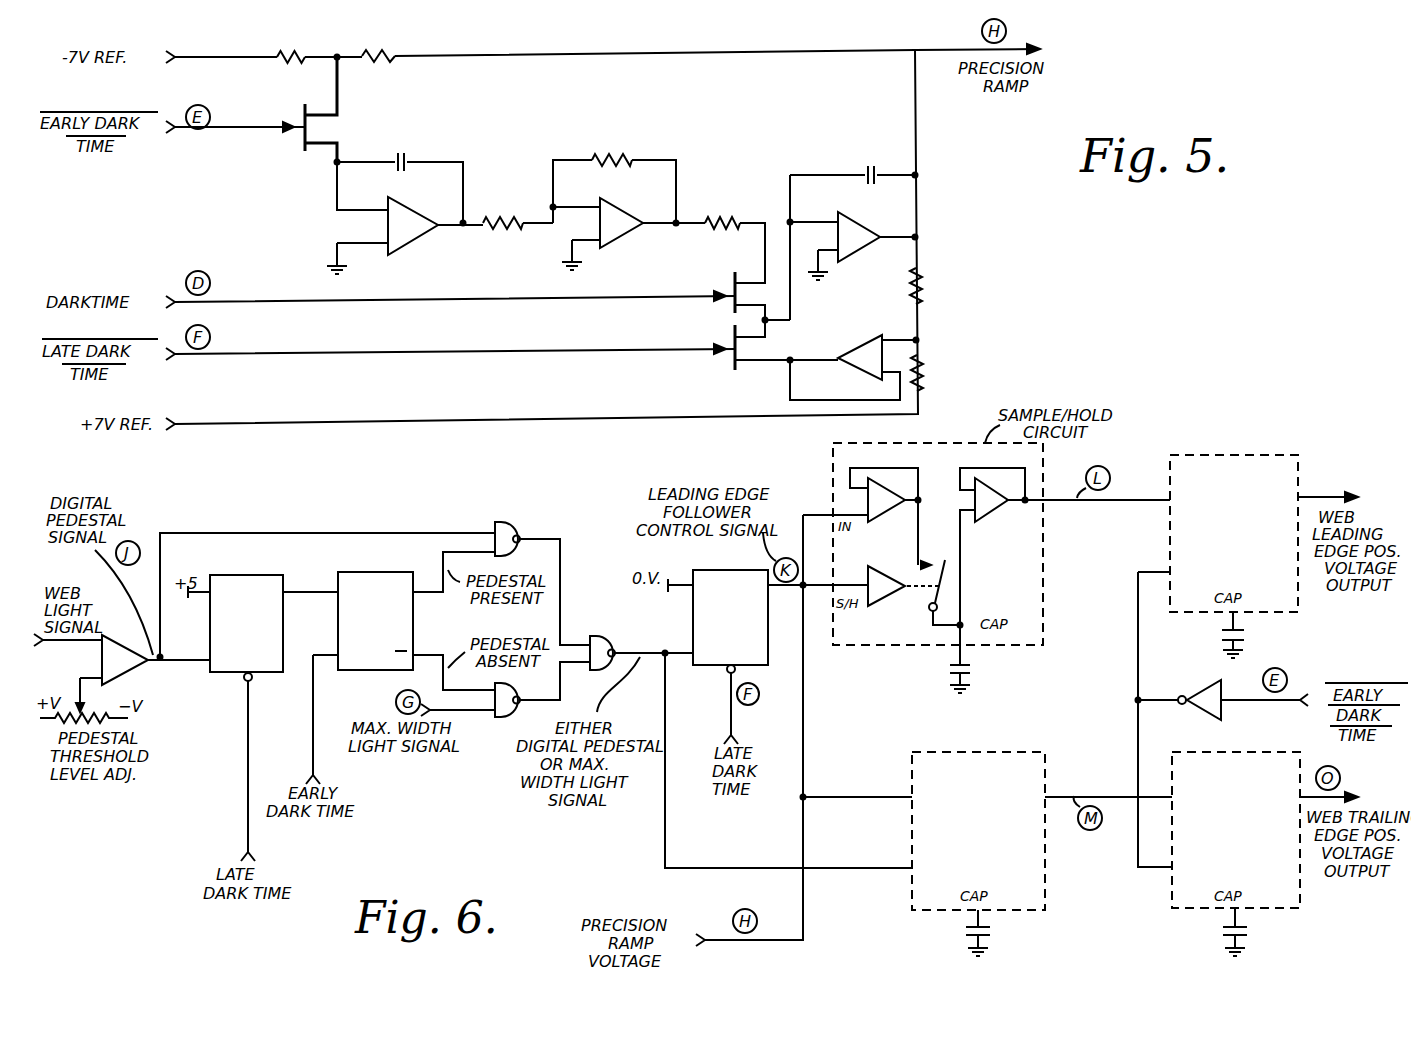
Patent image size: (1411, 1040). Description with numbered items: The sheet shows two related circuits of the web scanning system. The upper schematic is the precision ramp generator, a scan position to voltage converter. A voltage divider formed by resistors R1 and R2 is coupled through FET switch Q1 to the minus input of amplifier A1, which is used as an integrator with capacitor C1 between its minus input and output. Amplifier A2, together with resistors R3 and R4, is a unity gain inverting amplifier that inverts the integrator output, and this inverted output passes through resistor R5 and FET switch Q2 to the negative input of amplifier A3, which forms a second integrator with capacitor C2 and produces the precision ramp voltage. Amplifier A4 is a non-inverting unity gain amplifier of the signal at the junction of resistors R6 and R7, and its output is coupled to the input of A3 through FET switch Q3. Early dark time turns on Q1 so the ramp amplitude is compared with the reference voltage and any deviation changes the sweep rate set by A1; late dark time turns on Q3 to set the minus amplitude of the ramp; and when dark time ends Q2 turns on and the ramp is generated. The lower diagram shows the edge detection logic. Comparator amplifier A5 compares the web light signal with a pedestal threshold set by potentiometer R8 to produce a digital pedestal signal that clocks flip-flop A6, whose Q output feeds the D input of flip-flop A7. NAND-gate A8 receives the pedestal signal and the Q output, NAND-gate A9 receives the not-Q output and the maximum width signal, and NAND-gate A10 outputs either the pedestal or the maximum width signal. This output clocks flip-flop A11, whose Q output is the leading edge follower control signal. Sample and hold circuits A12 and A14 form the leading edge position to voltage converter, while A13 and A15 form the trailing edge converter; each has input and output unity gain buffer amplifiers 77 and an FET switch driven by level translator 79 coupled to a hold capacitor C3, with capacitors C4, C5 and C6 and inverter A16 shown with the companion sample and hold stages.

In FIG. 6, the input and output unity gain non-inverting buffer amplifiers 77 is at (897, 505).
In FIG. 6, the level translator 79 is at (955, 579).
In FIG. 5, the resistor R1 is at (290, 55).
In FIG. 5, the resistor R2 is at (378, 54).
In FIG. 5, the resistor R3 is at (500, 222).
In FIG. 5, the resistor R4 is at (611, 160).
In FIG. 5, the resistor R5 is at (721, 222).
In FIG. 5, the resistor R6 is at (936, 289).
In FIG. 5, the resistor R7 is at (936, 375).
In FIG. 6, the potentiometer R8 is at (84, 708).
In FIG. 5, the capacitor C1 is at (400, 178).
In FIG. 5, the capacitor C2 is at (852, 176).
In FIG. 6, the capacitor C3 is at (993, 659).
In FIG. 6, the hold capacitor C4 is at (1007, 933).
In FIG. 6, the hold capacitor C5 is at (1260, 635).
In FIG. 6, the hold capacitor C6 is at (1260, 932).
In FIG. 5, the field effect transistor switch Q1 is at (296, 109).
In FIG. 5, the FET switch Q2 is at (734, 291).
In FIG. 5, the FET switch Q3 is at (744, 353).
In FIG. 5, the amplifier A1 is at (435, 230).
In FIG. 5, the amplifier A2 is at (652, 228).
In FIG. 5, the amplifier A3 is at (876, 243).
In FIG. 5, the amplifier A4 is at (858, 350).
In FIG. 6, the comparator amplifier A5 is at (131, 665).
In FIG. 6, the flip-flop A6 is at (246, 616).
In FIG. 6, the flip-flop A7 is at (375, 609).
In FIG. 6, the NAND-gate A8 is at (517, 537).
In FIG. 6, the NAND-gate A9 is at (515, 706).
In FIG. 6, the NAND-gate A10 is at (612, 650).
In FIG. 6, the flip-flop circuit A11 is at (730, 610).
In FIG. 6, the sample and hold circuit A12 is at (882, 655).
In FIG. 6, the sample and hold circuit A13 is at (978, 820).
In FIG. 6, the sample and hold circuit A14 is at (1234, 523).
In FIG. 6, the sample and hold circuit A15 is at (1236, 819).
In FIG. 6, the inverter A16 is at (1199, 691).